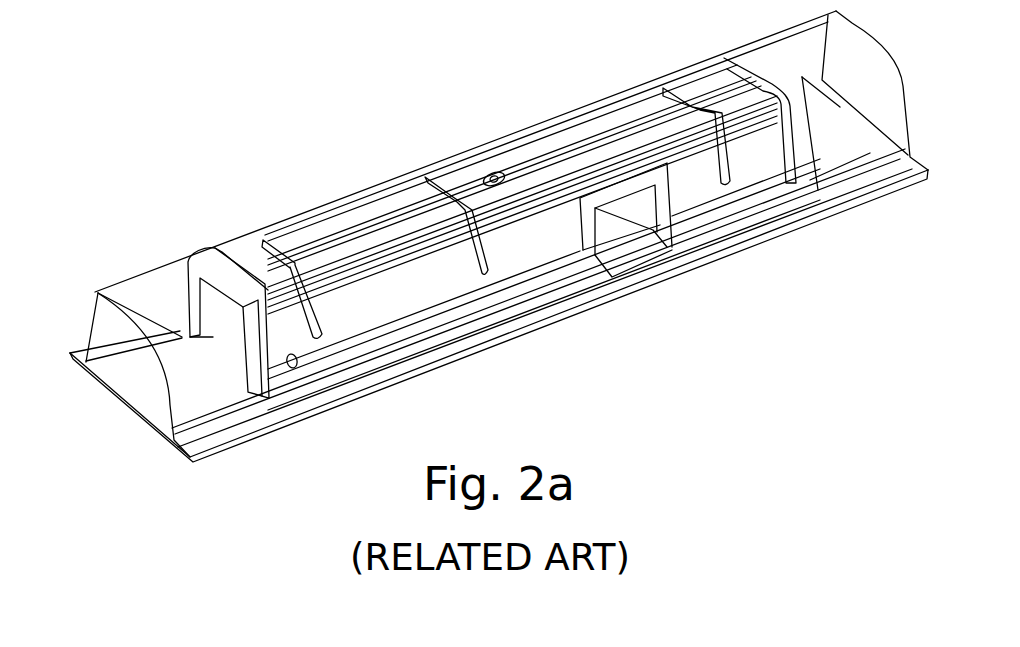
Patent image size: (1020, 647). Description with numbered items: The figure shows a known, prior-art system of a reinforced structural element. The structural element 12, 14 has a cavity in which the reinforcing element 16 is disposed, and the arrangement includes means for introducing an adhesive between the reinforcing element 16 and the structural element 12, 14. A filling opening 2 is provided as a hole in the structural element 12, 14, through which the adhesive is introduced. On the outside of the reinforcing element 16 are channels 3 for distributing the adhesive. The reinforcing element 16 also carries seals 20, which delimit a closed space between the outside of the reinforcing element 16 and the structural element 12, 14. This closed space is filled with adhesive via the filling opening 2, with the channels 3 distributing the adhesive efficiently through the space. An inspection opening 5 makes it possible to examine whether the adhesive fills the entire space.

The structural element 12 is at (135, 286).
The structural element 14 is at (499, 315).
The reinforcing element 16 is at (385, 207).
The seals 20 is at (224, 262).
The channels 3 is at (628, 122).
The filling opening 2 is at (493, 172).
The inspection opening 5 is at (298, 366).